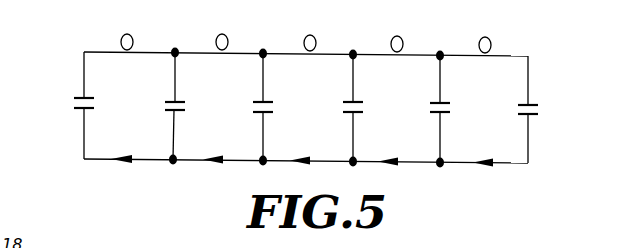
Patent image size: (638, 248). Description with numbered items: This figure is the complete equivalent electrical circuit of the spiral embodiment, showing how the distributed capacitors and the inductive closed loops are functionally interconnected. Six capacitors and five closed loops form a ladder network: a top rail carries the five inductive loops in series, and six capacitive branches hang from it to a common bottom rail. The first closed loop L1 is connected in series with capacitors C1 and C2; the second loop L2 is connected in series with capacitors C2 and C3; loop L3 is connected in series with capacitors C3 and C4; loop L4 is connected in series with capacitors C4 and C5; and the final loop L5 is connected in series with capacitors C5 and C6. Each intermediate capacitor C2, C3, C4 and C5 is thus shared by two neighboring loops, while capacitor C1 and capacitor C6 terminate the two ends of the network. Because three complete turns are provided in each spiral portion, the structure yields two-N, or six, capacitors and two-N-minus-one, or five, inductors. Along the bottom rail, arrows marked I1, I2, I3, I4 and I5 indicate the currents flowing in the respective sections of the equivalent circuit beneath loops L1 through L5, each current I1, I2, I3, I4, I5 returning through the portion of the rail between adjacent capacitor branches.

The first closed loop L1 is at (132, 32).
The second loop L2 is at (227, 32).
The loop L3 is at (314, 33).
The loop L4 is at (401, 35).
The final loop L5 is at (489, 36).
The capacitor C1 is at (90, 98).
The capacitor C2 is at (181, 102).
The capacitor C3 is at (269, 102).
The capacitor C4 is at (359, 102).
The capacitor C5 is at (446, 103).
The capacitor C6 is at (534, 105).
The current I1 is at (119, 177).
The current I2 is at (213, 178).
The current I3 is at (307, 179).
The current I4 is at (400, 179).
The current I5 is at (482, 180).